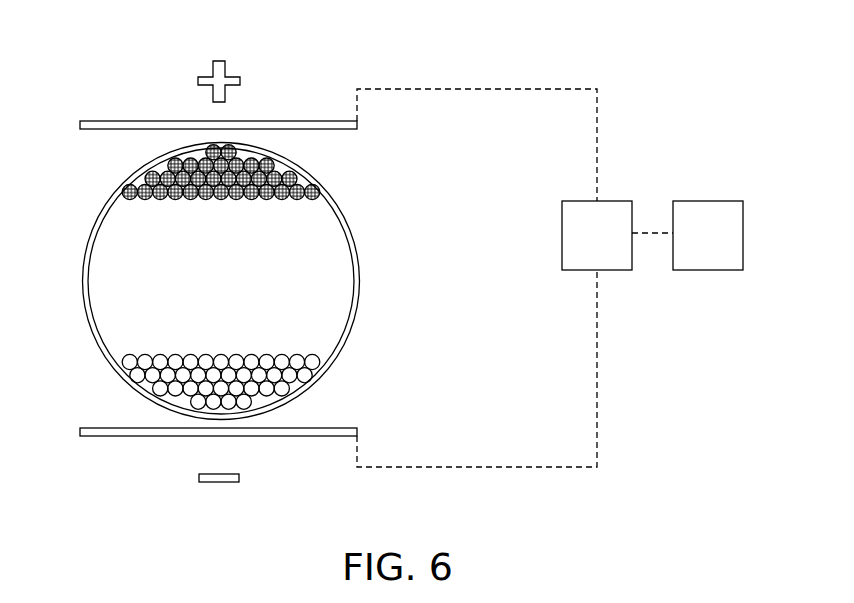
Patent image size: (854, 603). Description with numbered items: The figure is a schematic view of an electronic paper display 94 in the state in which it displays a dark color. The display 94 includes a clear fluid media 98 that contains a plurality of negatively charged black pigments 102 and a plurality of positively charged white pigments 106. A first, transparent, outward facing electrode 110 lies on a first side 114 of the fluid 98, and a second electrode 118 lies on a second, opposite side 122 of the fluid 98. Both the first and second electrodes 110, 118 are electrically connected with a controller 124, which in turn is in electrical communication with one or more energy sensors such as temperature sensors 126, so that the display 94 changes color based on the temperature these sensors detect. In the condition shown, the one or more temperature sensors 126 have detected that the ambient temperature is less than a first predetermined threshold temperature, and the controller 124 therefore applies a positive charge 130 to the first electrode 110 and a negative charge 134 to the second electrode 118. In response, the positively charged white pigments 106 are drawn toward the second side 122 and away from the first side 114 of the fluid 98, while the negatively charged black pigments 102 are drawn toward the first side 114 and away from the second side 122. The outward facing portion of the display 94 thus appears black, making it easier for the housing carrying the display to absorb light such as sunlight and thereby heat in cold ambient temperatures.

The electronic paper display 94 is at (472, 173).
The clear fluid media 98 is at (112, 275).
The negatively charged black pigments 102 is at (143, 178).
The positively charged white pigments 106 is at (146, 376).
The first electrode 110 is at (295, 121).
The first side 114 is at (300, 148).
The second electrode 118 is at (305, 436).
The second side 122 is at (292, 410).
The controller 124 is at (608, 270).
The temperature sensors 126 is at (718, 270).
The positive charge 130 is at (239, 77).
The negative charge 134 is at (198, 477).